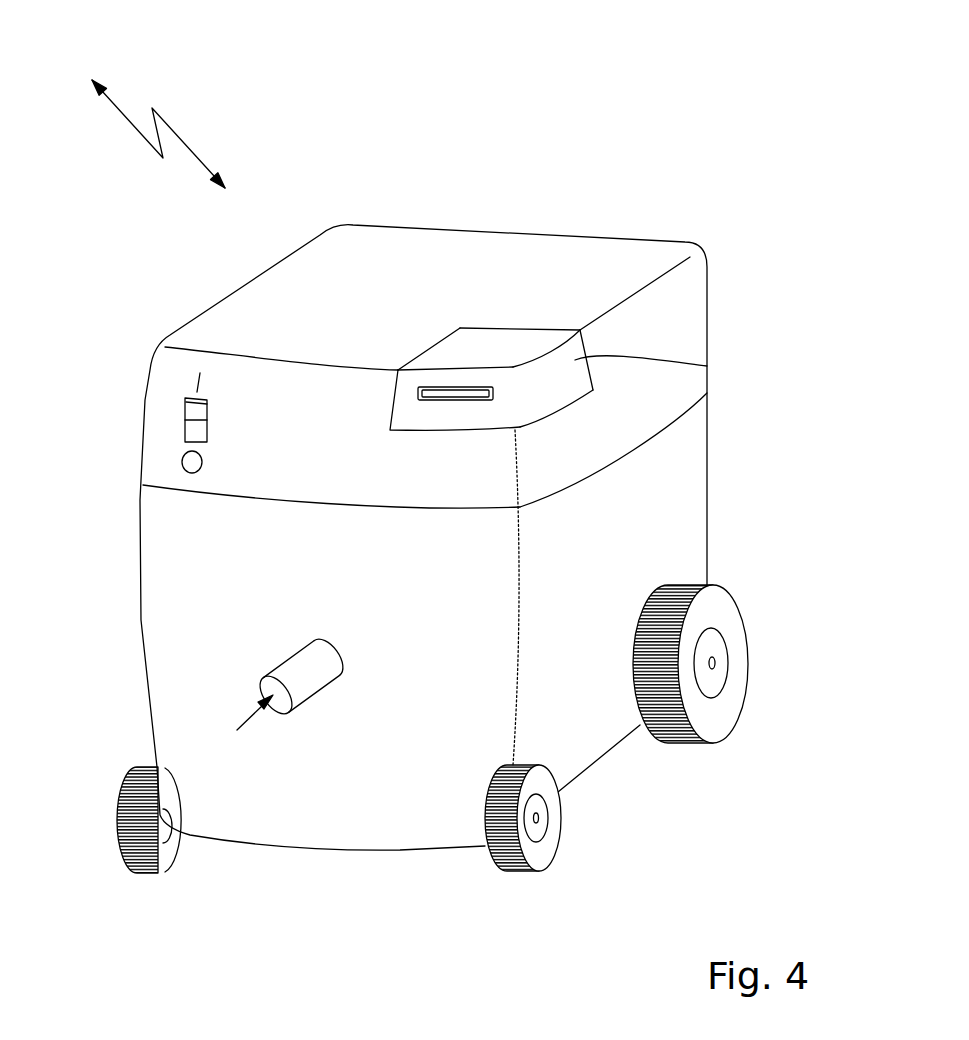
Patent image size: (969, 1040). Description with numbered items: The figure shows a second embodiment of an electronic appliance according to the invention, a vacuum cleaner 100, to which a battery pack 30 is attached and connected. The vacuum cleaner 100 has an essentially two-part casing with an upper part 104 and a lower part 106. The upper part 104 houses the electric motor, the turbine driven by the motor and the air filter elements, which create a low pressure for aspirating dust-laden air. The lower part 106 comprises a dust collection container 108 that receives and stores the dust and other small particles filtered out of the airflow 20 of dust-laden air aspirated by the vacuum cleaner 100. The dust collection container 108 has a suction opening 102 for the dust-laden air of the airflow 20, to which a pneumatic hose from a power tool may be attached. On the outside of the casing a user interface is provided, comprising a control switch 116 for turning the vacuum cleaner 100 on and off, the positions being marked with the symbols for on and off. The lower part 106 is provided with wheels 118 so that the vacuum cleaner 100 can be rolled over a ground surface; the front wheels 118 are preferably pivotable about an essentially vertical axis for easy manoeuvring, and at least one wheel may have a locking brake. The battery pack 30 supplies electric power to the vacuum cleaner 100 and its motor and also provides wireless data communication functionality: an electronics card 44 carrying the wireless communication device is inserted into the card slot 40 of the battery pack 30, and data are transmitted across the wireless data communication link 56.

The vacuum cleaner 100 is at (655, 140).
The wireless data communication link 56 is at (122, 112).
The electronics card 44 is at (448, 390).
The upper part 104 is at (690, 288).
The battery pack 30 is at (707, 366).
The control switch 116 is at (183, 410).
The dust collection container 108 is at (176, 530).
The lower part 106 is at (672, 530).
The card slot 40 is at (465, 402).
The suction opening 102 is at (305, 668).
The airflow 20 is at (252, 720).
The wheels 118 is at (715, 723).